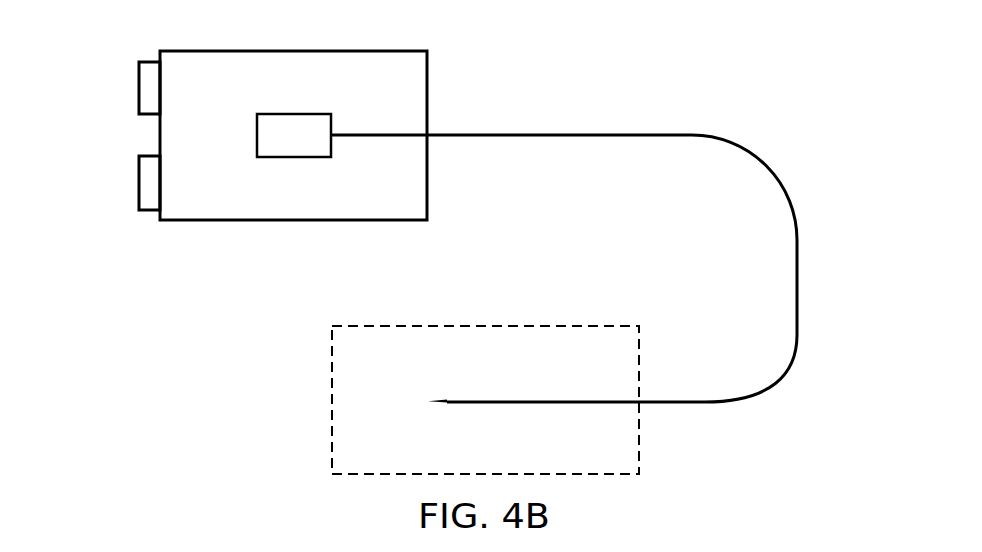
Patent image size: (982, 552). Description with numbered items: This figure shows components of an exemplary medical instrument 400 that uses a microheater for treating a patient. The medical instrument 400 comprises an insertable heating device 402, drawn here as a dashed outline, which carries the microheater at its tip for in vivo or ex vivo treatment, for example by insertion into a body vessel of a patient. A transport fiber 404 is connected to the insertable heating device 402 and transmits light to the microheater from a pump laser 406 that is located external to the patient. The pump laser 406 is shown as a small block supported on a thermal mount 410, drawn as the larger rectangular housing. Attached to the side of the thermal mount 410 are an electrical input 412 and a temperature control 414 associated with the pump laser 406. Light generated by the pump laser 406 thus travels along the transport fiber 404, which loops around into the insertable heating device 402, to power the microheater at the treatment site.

The medical instrument 400 is at (330, 412).
The insertable heating device 402 is at (485, 400).
The transport fiber 404 is at (649, 134).
The pump laser 406 is at (294, 113).
The thermal mount 410 is at (430, 85).
The electrical input 412 is at (139, 89).
The temperature control 414 is at (139, 185).